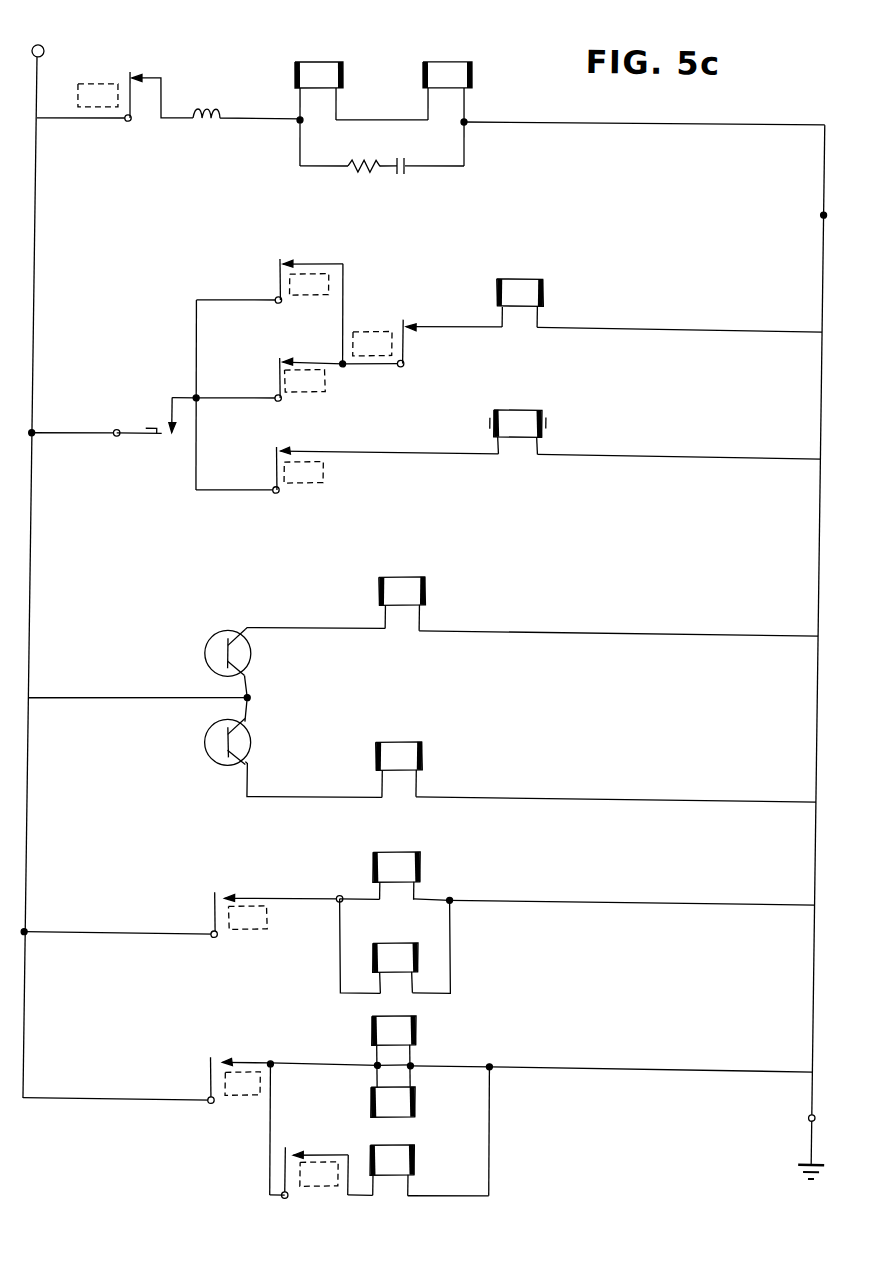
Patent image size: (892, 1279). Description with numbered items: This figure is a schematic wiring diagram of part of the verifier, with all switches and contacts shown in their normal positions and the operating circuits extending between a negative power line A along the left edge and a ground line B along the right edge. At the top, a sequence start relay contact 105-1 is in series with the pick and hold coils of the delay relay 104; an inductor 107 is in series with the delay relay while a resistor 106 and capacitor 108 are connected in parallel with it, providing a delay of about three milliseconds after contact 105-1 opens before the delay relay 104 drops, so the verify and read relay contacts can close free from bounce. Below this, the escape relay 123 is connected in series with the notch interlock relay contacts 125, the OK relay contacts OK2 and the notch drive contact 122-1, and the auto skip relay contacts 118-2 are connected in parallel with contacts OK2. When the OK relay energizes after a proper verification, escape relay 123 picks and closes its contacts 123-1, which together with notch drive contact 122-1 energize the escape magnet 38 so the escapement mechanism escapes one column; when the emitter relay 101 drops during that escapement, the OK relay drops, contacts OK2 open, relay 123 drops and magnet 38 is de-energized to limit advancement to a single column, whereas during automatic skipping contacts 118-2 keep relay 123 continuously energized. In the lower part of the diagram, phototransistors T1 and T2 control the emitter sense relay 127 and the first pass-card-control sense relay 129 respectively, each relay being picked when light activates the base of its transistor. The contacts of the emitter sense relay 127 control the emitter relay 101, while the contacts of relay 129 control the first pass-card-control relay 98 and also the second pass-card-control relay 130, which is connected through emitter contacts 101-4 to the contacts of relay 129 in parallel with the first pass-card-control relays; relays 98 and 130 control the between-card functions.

The negative power line A is at (37, 55).
The ground line B is at (818, 211).
The sequence start relay contact 105-1 is at (133, 78).
The inductor 107 is at (203, 128).
The delay relay 104 is at (307, 64).
The resistor 106 is at (350, 173).
The capacitor 108 is at (400, 172).
The notch drive contact 122-1 is at (167, 428).
The auto skip relay contacts 118-2 is at (284, 264).
The OK relay contacts OK2 is at (285, 362).
The notch interlock relay contacts 125 is at (404, 325).
The escape relay 123 is at (538, 289).
The escape relay contacts 123-1 is at (286, 451).
The escape magnet 38 is at (517, 411).
The phototransistor T2 is at (208, 648).
The phototransistor T1 is at (209, 749).
The PCC-1 sense relay 129 is at (411, 578).
The emitter sense relay 127 is at (406, 742).
The emitter relay 101 is at (416, 872).
The PCC-1 relay 98 is at (410, 1032).
The PCC-2 relay 130 is at (410, 1165).
The emitter contacts 101-4 is at (300, 1154).